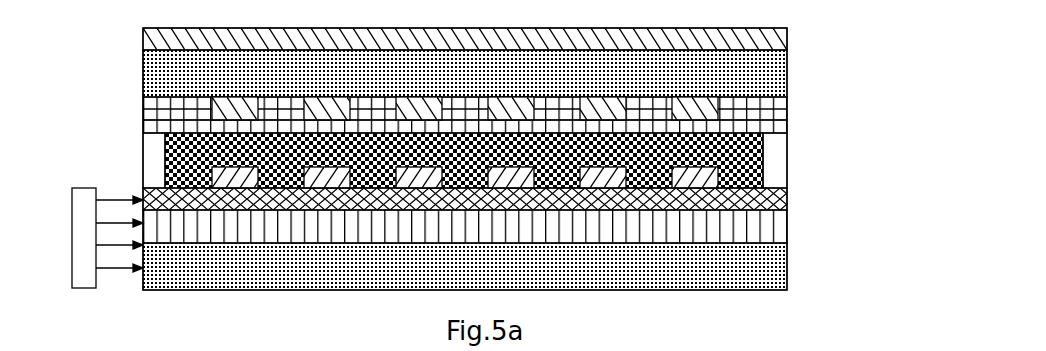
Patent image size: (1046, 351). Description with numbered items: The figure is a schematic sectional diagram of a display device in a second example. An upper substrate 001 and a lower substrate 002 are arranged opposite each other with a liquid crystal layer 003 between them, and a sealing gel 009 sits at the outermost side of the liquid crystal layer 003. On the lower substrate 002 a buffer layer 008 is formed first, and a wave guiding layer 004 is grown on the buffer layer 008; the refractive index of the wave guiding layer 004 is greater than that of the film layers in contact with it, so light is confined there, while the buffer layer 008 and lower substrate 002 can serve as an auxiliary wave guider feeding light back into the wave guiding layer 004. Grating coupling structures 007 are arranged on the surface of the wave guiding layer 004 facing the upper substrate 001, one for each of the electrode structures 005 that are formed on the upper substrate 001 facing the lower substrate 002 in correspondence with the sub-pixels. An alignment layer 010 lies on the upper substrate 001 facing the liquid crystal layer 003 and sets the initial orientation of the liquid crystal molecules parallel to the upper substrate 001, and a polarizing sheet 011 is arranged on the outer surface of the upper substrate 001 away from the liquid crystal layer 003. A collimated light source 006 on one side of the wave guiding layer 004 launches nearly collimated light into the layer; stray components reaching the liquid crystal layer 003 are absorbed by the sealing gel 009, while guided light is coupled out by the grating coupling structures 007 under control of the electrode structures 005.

The polarizing sheet 011 is at (770, 40).
The upper substrate 001 is at (778, 75).
The electrode structures 005 is at (787, 107).
The alignment layer 010 is at (775, 128).
The liquid crystal layer 003 is at (763, 153).
The grating coupling structures 007 is at (763, 173).
The sealing gel 009 is at (155, 152).
The wave guiding layer 004 is at (787, 200).
The buffer layer 008 is at (775, 230).
The lower substrate 002 is at (778, 267).
The collimated light source 006 is at (90, 197).